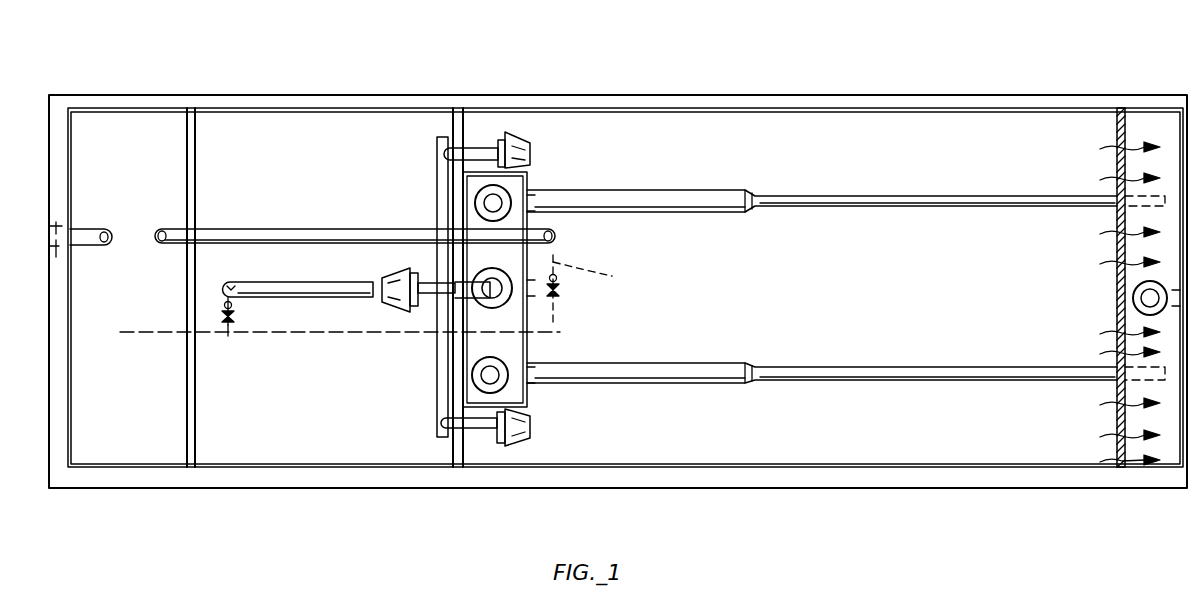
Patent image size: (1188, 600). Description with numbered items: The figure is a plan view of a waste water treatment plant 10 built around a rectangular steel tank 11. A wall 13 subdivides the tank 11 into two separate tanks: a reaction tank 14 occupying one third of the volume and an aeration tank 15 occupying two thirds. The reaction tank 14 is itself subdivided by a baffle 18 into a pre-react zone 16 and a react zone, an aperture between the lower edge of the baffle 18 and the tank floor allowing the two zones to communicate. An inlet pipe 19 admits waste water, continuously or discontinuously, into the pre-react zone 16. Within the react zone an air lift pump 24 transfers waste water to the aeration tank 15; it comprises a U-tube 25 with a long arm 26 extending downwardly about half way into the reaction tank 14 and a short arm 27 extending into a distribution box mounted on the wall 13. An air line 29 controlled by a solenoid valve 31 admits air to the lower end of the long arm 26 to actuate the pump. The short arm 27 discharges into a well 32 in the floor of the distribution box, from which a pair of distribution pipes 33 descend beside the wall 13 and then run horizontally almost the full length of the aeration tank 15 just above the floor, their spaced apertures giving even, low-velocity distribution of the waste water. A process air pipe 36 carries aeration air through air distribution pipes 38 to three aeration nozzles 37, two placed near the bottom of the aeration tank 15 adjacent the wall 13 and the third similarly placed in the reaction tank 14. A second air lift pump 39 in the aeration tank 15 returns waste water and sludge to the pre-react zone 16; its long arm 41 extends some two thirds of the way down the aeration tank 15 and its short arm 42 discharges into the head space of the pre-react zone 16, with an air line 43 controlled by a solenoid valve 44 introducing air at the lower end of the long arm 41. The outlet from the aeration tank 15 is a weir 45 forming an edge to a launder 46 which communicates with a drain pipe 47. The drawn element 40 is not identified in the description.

The waste water treatment plant 10 is at (575, 68).
The rectangular steel tank 11 is at (898, 463).
The wall 13 is at (450, 443).
The reaction tank 14 is at (327, 385).
The aeration tank 15 is at (782, 420).
The pre-react zone 16 is at (122, 385).
The baffle 18 is at (196, 428).
The inlet pipe 19 is at (95, 247).
The air lift pump 24 is at (336, 300).
The U-tube 25 is at (298, 288).
The long arm 26 is at (244, 280).
The short arm 27 is at (485, 293).
The air line 29 is at (238, 308).
The solenoid valve 31 is at (228, 320).
The well 32 is at (500, 293).
The distribution pipes 33 is at (888, 212).
The process air pipe 36 is at (440, 412).
The aeration nozzles 37 is at (531, 152).
The air distribution pipes 38 is at (498, 140).
The second air lift pump 39 is at (562, 240).
The transfer pipe 40 is at (305, 227).
The long arm 41 is at (558, 228).
The short arm 42 is at (160, 228).
The air line 43 is at (599, 290).
The solenoid valve 44 is at (560, 296).
The weir 45 is at (1118, 320).
The launder 46 is at (1140, 362).
The drain pipe 47 is at (1138, 298).